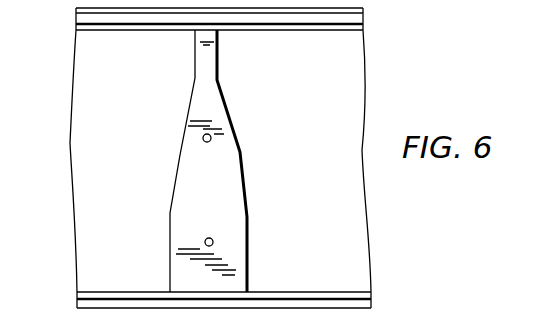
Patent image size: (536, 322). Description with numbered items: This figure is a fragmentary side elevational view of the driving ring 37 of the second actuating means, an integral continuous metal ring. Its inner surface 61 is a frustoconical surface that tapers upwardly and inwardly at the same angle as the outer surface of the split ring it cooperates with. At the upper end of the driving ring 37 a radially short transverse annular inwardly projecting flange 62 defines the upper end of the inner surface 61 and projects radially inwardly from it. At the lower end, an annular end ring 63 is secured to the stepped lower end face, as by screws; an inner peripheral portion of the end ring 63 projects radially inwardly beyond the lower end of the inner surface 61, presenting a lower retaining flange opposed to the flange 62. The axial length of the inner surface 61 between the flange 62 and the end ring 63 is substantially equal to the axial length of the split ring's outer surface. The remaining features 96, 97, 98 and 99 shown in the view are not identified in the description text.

The driving ring 37 is at (70, 143).
The inner surface 61 is at (128, 180).
The flange 62 is at (104, 28).
The end ring 63 is at (78, 303).
The tapered slot 96 is at (240, 152).
The narrow slot portion 97 is at (208, 63).
The wide slot portion 98 is at (238, 262).
The pin holes 99 is at (207, 142).